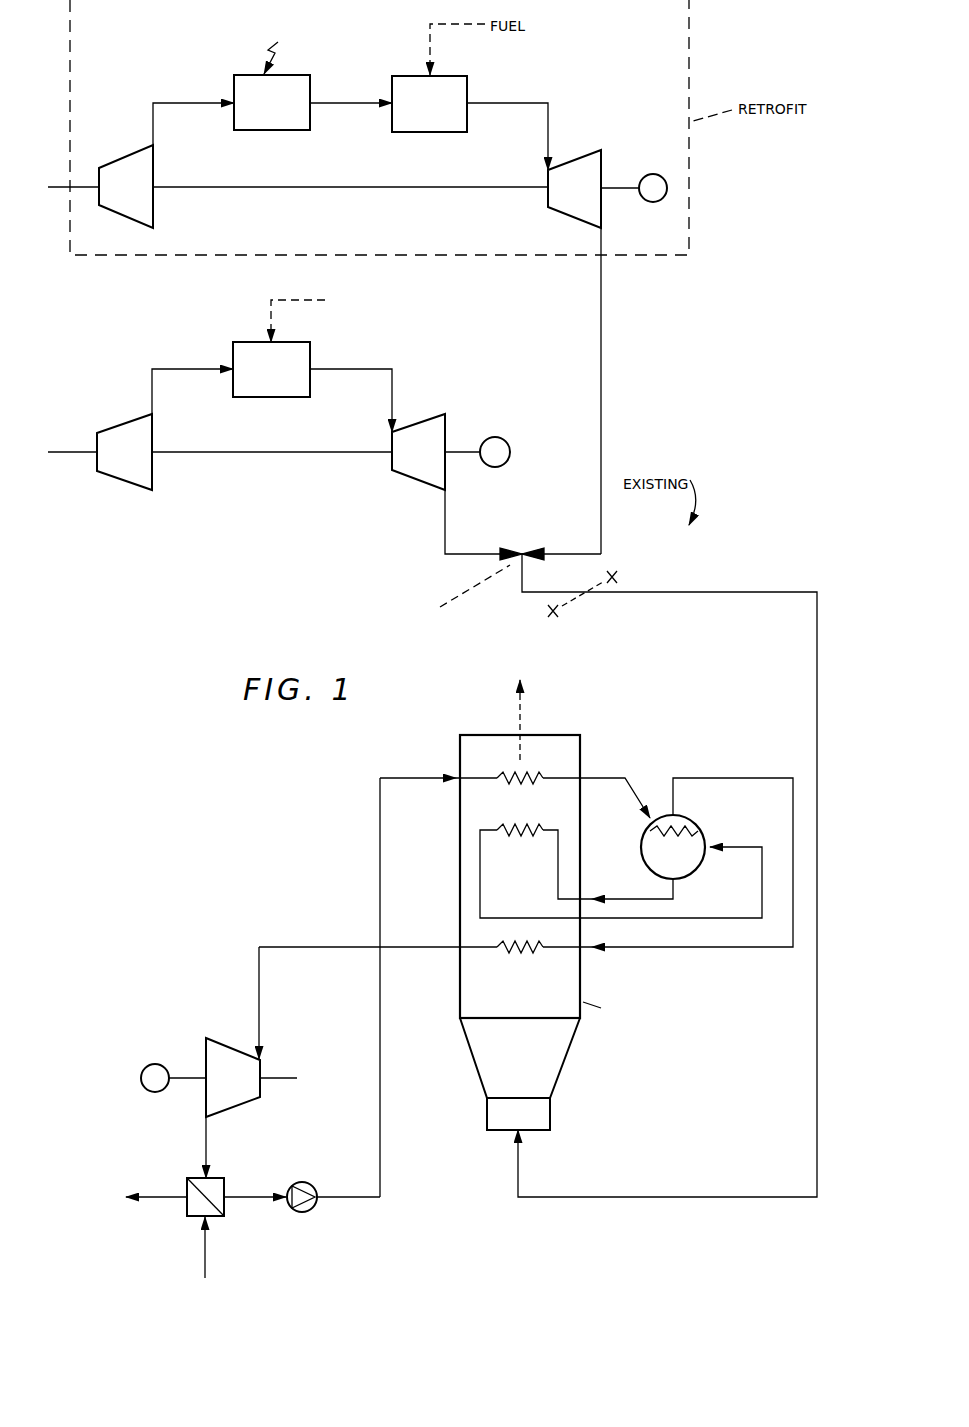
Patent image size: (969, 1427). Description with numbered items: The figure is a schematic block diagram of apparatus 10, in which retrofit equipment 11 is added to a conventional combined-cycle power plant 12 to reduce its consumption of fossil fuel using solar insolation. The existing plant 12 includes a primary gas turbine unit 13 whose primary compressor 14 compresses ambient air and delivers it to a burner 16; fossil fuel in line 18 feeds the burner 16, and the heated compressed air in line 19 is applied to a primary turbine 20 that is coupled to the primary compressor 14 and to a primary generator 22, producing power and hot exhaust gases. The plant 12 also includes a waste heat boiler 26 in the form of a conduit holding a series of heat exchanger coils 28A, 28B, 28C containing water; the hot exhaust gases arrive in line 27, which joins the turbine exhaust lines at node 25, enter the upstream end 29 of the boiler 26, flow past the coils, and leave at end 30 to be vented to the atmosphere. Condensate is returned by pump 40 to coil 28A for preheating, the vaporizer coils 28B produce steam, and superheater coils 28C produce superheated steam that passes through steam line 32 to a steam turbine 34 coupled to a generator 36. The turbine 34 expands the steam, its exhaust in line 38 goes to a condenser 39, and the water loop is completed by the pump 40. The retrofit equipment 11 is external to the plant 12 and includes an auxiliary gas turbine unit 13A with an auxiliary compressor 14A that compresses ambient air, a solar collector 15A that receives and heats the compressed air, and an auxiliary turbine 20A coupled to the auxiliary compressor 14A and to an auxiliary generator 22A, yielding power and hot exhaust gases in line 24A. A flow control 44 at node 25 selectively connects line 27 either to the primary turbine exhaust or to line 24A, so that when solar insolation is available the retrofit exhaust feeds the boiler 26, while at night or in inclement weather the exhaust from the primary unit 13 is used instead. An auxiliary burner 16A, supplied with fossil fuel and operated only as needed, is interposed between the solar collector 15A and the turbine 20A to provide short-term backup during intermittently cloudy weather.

The apparatus 10 is at (780, 60).
The retrofit equipment 11 is at (690, 33).
The combined-cycle power plant 12 is at (718, 572).
The primary gas turbine unit 13 is at (228, 553).
The auxiliary gas turbine unit 13A is at (185, 85).
The primary compressor 14 is at (152, 470).
The auxiliary compressor 14A is at (153, 205).
The solar collector 15A is at (265, 131).
The burner 16 is at (287, 342).
The auxiliary burner 16A is at (470, 90).
The fuel line 18 is at (293, 300).
The heated compressed air line 19 is at (394, 378).
The primary turbine 20 is at (432, 418).
The auxiliary turbine 20A is at (569, 168).
The primary generator 22 is at (505, 440).
The auxiliary generator 22A is at (648, 203).
The exhaust gas line 24A is at (447, 527).
The node 25 is at (519, 561).
The waste heat boiler 26 is at (583, 989).
The exhaust gas line 27 is at (645, 592).
The heat exchanger coil 28A is at (512, 788).
The vaporizer coil 28B is at (512, 840).
The superheater coil 28C is at (512, 957).
The upstream end 29 is at (526, 1134).
The boiler exit end 30 is at (497, 735).
The steam line 32 is at (333, 945).
The steam turbine 34 is at (262, 1069).
The generator 36 is at (153, 1093).
The exhaust steam line 38 is at (210, 1136).
The condenser 39 is at (226, 1187).
The pump 40 is at (312, 1183).
The flow control 44 is at (474, 589).